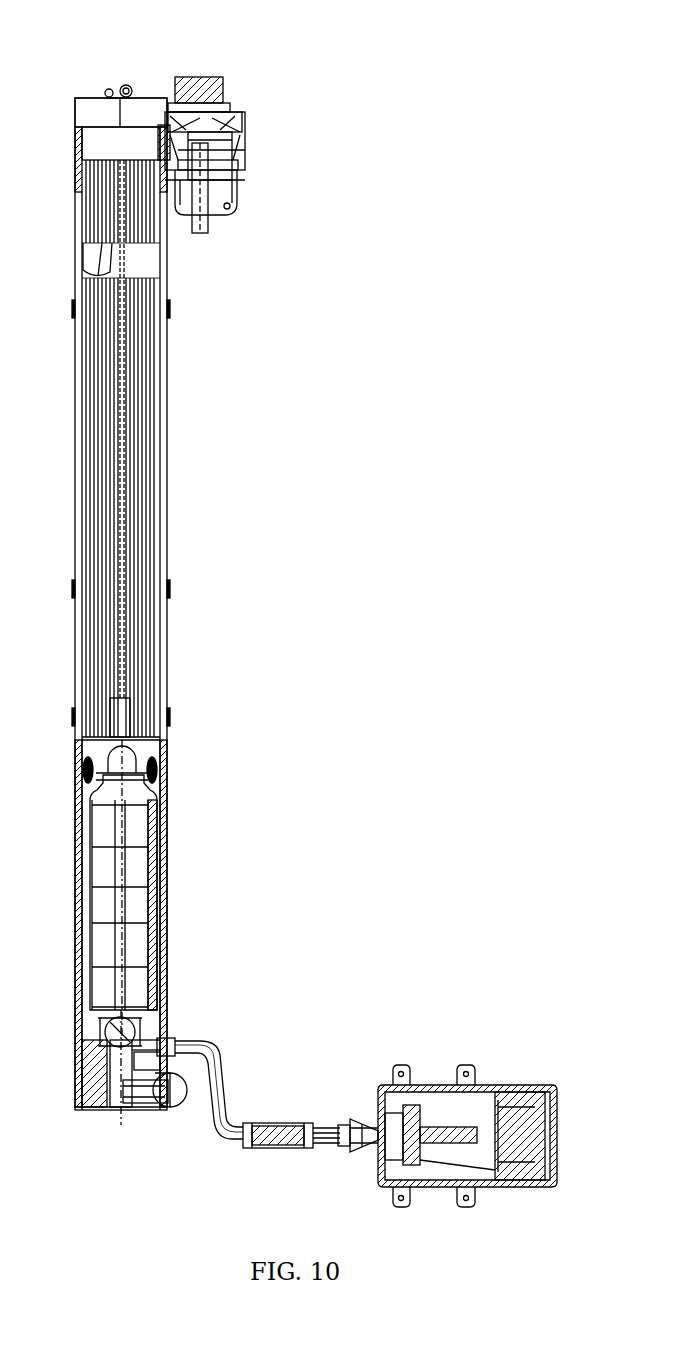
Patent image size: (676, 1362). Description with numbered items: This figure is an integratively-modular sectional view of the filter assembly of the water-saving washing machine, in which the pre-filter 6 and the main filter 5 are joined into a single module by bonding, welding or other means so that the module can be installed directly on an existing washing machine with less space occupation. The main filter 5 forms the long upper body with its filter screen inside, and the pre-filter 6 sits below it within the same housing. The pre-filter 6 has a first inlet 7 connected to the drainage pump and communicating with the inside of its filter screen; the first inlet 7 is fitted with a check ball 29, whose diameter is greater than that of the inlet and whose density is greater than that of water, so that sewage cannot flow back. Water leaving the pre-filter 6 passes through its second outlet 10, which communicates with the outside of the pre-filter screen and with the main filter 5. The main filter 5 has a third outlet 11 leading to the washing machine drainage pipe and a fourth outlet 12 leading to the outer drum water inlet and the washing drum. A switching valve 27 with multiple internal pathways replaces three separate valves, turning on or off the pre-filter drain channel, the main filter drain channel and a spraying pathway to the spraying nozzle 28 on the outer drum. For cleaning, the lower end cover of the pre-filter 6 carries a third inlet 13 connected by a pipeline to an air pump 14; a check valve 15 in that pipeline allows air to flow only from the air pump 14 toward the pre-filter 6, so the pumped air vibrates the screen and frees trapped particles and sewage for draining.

The main filter 5 is at (150, 503).
The pre-filter 6 is at (138, 905).
The first inlet 7 is at (167, 1090).
The second outlet 10 is at (157, 767).
The third outlet 11 is at (205, 128).
The fourth outlet 12 is at (130, 87).
The third inlet 13 is at (175, 1040).
The air pump 14 is at (427, 1075).
The check valve 15 is at (280, 1121).
The switching valve 27 is at (208, 78).
The spraying nozzle 28 is at (203, 237).
The check ball 29 is at (128, 1030).